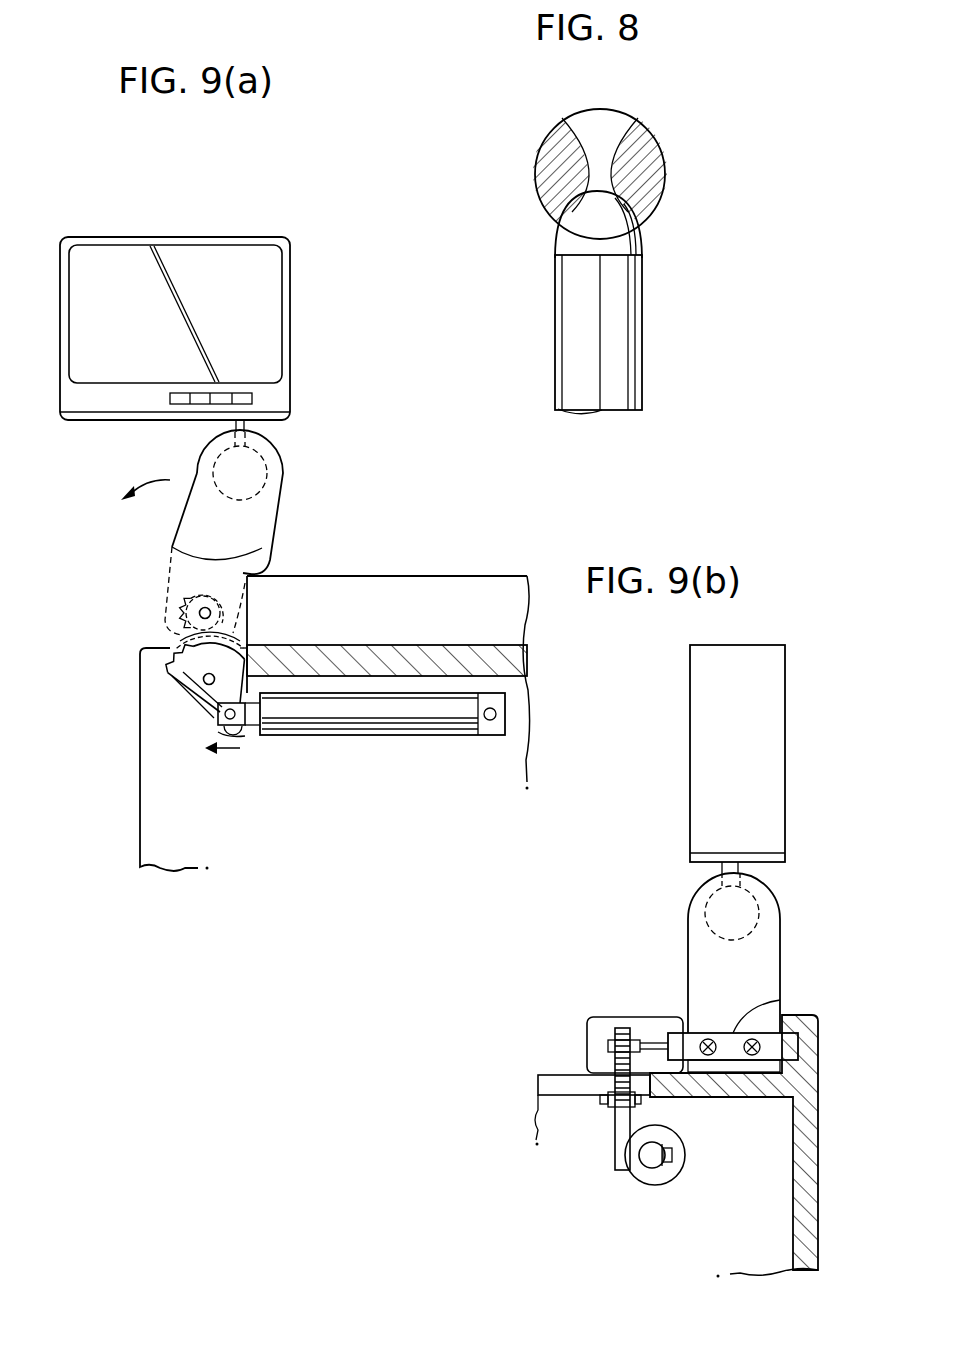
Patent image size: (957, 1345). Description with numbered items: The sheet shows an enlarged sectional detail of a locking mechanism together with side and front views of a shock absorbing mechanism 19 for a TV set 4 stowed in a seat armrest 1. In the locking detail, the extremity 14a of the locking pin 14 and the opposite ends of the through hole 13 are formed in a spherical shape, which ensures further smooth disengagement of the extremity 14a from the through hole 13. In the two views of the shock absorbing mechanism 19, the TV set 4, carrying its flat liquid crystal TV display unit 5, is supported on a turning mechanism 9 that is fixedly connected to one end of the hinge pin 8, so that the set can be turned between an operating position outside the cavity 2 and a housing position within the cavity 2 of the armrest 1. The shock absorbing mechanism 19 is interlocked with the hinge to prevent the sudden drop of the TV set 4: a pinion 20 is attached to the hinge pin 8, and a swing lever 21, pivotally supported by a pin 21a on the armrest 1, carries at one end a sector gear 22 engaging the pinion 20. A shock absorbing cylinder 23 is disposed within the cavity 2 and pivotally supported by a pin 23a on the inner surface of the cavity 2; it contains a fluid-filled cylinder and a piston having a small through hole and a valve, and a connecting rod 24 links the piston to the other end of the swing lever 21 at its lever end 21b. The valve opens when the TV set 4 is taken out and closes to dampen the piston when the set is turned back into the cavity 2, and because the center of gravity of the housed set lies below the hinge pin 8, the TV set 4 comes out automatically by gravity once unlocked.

In FIG. 9A, the center armrest 1 is at (460, 550).
In FIG. 9A, the cavity 2 is at (512, 768).
In FIG. 9B, the cavity 2 is at (770, 1200).
In FIG. 9A, the TV set 4 is at (162, 237).
In FIG. 9B, the TV set 4 is at (752, 645).
In FIG. 9A, the TV display unit 5 is at (262, 315).
In FIG. 8, the hinge pin 8 is at (666, 174).
In FIG. 9A, the hinge pin 8 is at (200, 612).
In FIG. 9B, the hinge pin 8 is at (740, 1030).
In FIG. 9A, the turning mechanism 9 is at (282, 485).
In FIG. 9B, the turning mechanism 9 is at (783, 945).
In FIG. 8, the through hole 13 is at (626, 142).
In FIG. 8, the locking pin 14 is at (640, 320).
In FIG. 8, the extremity of the locking pin 14a is at (640, 243).
In FIG. 9A, the shock absorbing mechanism 19 is at (272, 762).
In FIG. 9B, the shock absorbing mechanism 19 is at (626, 978).
In FIG. 9A, the pinion 20 is at (203, 597).
In FIG. 9B, the pinion 20 is at (620, 1028).
In FIG. 9A, the swing lever 21 is at (178, 678).
In FIG. 9B, the swing lever 21 is at (615, 1117).
In FIG. 9A, the pin 21a is at (212, 686).
In FIG. 9A, the lever end 21b is at (222, 730).
In FIG. 9A, the sector gear 22 is at (258, 665).
In FIG. 9A, the shock absorbing cylinder 23 is at (355, 738).
In FIG. 9B, the shock absorbing cylinder 23 is at (662, 1186).
In FIG. 9A, the pin 23a is at (490, 722).
In FIG. 9A, the connecting rod 24 is at (250, 730).
In FIG. 9B, the connecting rod 24 is at (642, 1168).